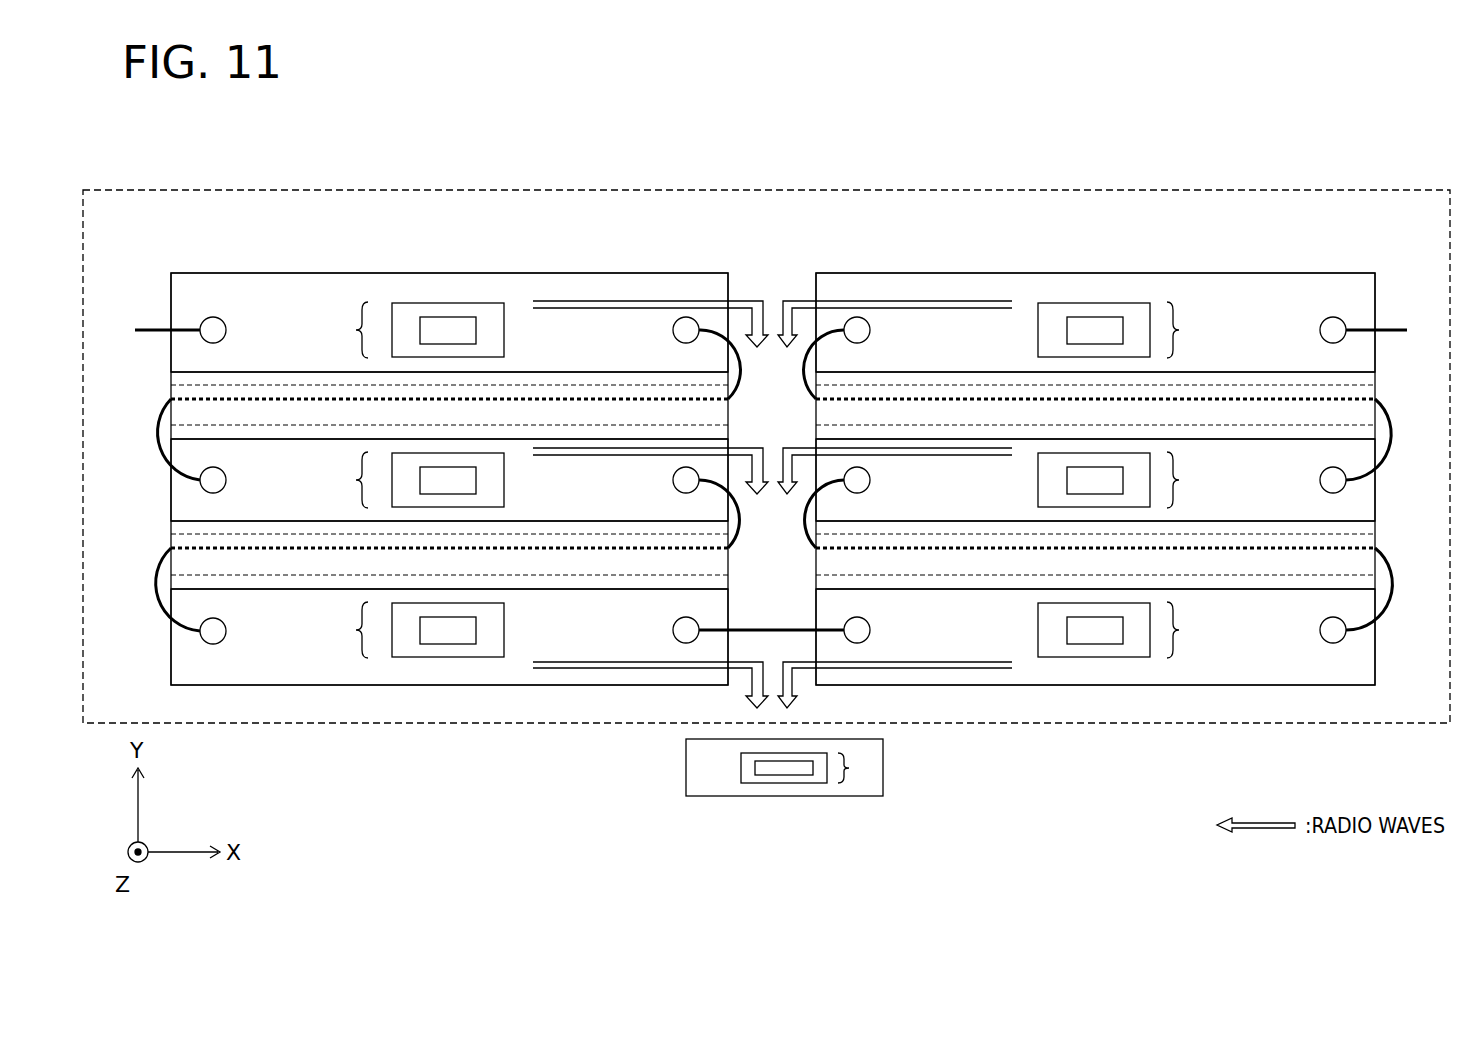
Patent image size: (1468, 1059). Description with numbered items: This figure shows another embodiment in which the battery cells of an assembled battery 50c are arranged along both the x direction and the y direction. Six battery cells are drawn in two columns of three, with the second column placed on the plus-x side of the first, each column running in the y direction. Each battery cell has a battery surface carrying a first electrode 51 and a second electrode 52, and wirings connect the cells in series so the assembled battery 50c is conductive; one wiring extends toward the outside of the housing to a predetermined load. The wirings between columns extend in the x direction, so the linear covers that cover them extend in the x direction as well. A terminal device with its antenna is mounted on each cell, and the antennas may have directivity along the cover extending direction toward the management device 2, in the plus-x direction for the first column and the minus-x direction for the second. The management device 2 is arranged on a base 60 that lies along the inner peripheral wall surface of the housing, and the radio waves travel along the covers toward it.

The assembled battery 50c is at (1330, 187).
The first electrode 51 is at (227, 330).
The second electrode 52 is at (672, 330).
The base 60 is at (887, 762).
The management device 2 is at (803, 768).